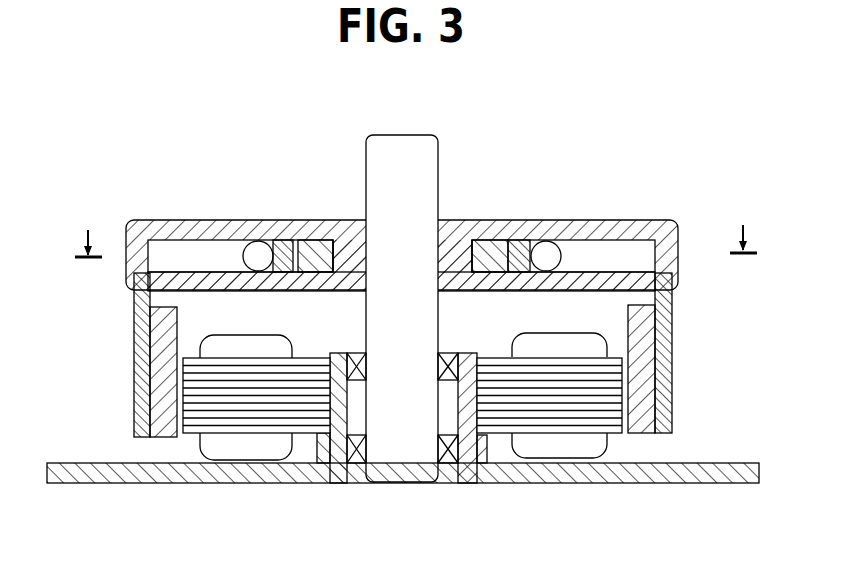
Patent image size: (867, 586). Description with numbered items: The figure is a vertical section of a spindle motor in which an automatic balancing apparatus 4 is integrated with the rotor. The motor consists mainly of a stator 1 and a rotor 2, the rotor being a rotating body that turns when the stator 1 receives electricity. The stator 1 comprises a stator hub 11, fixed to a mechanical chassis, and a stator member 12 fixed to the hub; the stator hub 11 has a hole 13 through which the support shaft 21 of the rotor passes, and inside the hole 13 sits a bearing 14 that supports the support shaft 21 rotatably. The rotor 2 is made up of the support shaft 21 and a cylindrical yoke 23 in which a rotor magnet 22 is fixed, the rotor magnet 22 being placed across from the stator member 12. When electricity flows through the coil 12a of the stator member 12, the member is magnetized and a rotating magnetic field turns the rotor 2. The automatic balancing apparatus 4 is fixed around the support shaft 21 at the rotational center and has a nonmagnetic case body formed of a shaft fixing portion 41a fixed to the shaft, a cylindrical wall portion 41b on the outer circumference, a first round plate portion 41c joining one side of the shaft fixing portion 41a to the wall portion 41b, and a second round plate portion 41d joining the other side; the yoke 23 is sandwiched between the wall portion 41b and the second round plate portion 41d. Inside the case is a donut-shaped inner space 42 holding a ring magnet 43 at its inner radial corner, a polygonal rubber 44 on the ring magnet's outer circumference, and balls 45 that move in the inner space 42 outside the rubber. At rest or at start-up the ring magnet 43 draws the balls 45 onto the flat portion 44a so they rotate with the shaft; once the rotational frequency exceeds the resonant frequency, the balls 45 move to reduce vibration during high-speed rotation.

The stator 1 is at (185, 448).
The rotor 2 is at (128, 377).
The automatic balancing apparatus 4 is at (647, 205).
The stator hub 11 is at (605, 477).
The stator member 12 is at (612, 433).
The coil 12a is at (527, 432).
The hole 13 is at (360, 462).
The bearing 14 is at (452, 462).
The support shaft 21 is at (418, 135).
The rotor magnet 22 is at (655, 408).
The yoke 23 is at (672, 367).
The shaft fixing portion 41a is at (347, 248).
The wall portion 41b is at (130, 243).
The first round plate portion 41c is at (133, 220).
The second round plate portion 41d is at (197, 278).
The inner space 42 is at (173, 248).
The ring magnet 43 is at (485, 240).
The polygonal rubber 44 is at (287, 248).
The flat portion 44a is at (537, 240).
The balls 45 is at (258, 252).